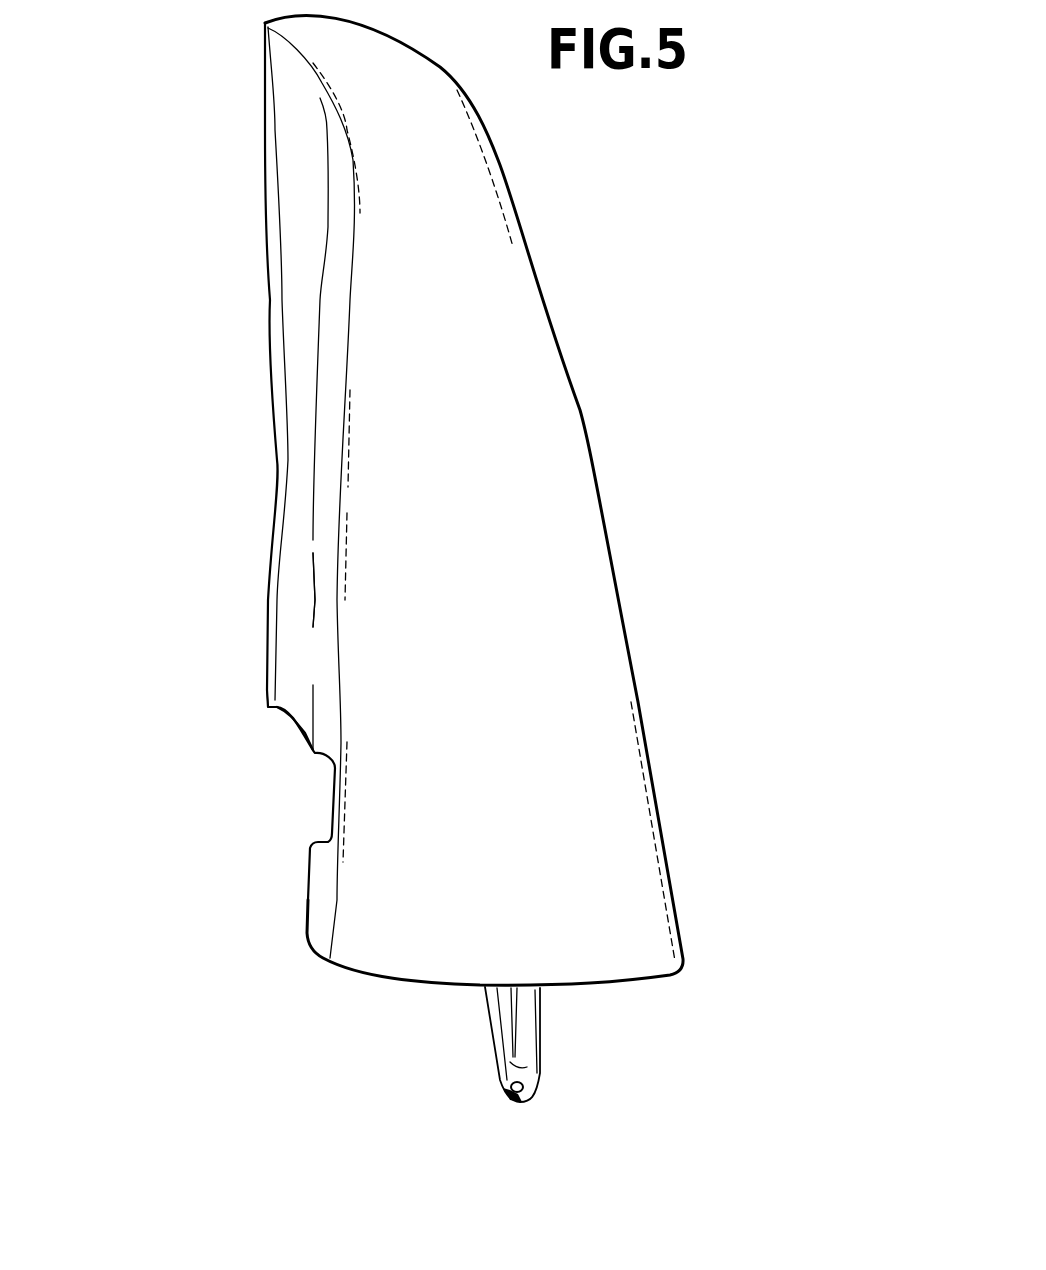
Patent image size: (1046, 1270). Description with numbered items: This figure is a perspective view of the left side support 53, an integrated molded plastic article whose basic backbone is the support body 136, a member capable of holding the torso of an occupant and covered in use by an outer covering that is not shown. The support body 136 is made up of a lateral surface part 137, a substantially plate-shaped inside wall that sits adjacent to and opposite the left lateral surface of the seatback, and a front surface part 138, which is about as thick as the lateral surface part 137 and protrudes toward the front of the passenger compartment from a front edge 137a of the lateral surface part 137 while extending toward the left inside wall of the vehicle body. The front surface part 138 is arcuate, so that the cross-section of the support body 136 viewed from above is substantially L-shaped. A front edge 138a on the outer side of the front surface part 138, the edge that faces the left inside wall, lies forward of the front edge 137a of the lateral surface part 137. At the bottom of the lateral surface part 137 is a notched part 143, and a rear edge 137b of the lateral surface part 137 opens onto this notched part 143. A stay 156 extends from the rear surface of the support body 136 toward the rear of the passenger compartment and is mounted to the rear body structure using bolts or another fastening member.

The left side support 53 is at (167, 210).
The support body 136 is at (520, 492).
The lateral surface part 137 is at (298, 360).
The front surface part 138 is at (483, 458).
The front edge of the lateral surface part 137a is at (337, 490).
The rear edge of the lateral surface part 137b is at (267, 687).
The notched part 143 is at (303, 732).
The front edge of the front surface part 138a is at (650, 800).
The stay 156 is at (542, 1023).